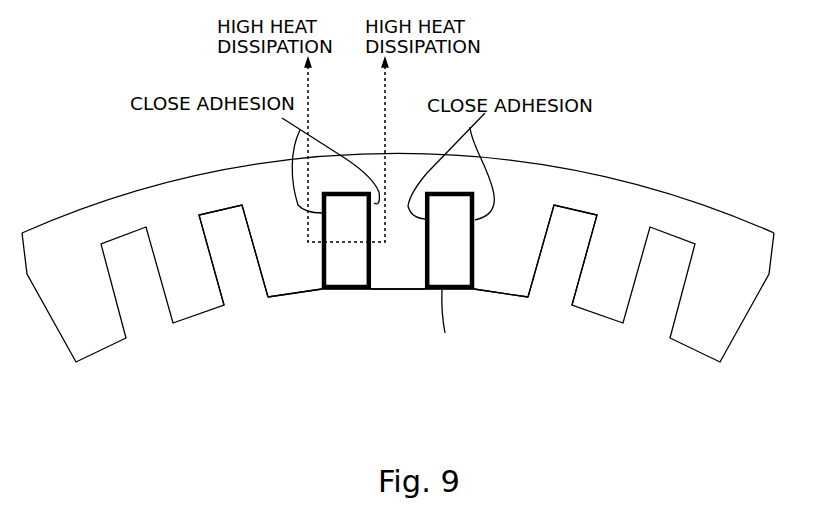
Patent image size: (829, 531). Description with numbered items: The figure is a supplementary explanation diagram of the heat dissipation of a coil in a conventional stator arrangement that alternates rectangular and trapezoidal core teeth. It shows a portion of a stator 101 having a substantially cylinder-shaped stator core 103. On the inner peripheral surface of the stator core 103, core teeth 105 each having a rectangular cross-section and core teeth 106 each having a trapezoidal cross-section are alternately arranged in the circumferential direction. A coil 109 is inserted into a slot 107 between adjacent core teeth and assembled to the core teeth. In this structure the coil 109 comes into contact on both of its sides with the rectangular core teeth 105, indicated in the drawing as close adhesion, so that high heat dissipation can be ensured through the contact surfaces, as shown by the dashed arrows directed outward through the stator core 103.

The stator 101 is at (697, 187).
The stator core 103 is at (613, 178).
The core teeth 105 is at (392, 290).
The core teeth 106 is at (295, 293).
The slot 107 is at (242, 292).
The coil 109 is at (336, 290).